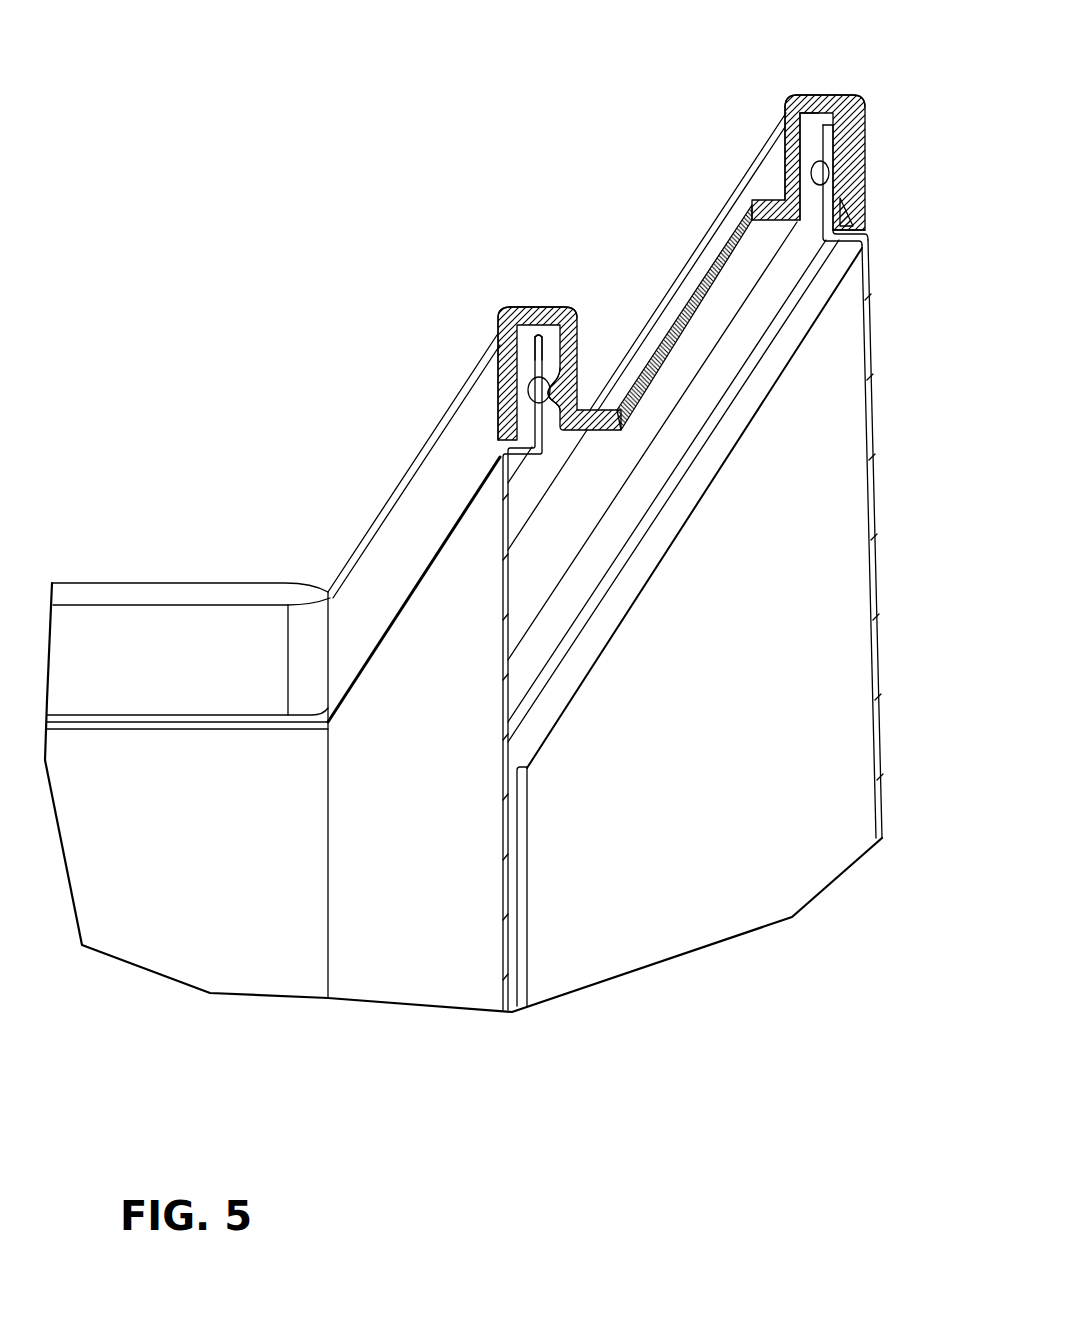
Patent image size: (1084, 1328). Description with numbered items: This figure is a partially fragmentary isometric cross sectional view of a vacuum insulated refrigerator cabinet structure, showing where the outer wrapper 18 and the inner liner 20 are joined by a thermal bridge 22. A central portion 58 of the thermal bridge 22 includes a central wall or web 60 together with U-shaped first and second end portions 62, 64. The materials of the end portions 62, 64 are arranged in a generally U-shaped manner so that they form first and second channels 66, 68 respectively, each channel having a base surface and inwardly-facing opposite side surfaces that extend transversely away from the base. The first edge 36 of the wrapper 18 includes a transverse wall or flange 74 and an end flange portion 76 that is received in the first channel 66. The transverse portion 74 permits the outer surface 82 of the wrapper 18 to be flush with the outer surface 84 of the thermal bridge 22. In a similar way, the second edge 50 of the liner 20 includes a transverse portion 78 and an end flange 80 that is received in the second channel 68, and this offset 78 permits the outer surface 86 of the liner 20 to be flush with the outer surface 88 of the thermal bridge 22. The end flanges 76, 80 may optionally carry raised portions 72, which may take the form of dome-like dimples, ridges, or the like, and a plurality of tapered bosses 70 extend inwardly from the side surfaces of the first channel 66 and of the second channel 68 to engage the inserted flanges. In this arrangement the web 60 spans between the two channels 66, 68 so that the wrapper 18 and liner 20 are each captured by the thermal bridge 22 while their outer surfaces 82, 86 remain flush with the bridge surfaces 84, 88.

The wrapper 18 is at (886, 665).
The liner 20 is at (486, 948).
The thermal bridge 22 is at (874, 112).
The first edge 36 is at (812, 128).
The second edge 50 is at (520, 327).
The central portion 58 is at (680, 181).
The central wall or web 60 is at (688, 300).
The first end portion 62 is at (870, 150).
The second end portion 64 is at (497, 375).
The first channel 66 is at (792, 128).
The second channel 68 is at (513, 338).
The tapered bosses 70 is at (578, 382).
The raised portions 72 is at (549, 372).
The transverse wall or flange 74 is at (838, 243).
The end flange portion 76 is at (808, 148).
The transverse portion 78 is at (503, 452).
The end flange 80 is at (541, 335).
The outer surface 82 is at (875, 466).
The outer surface 84 is at (858, 190).
The outer surface 86 is at (457, 630).
The outer surface 88 is at (466, 436).